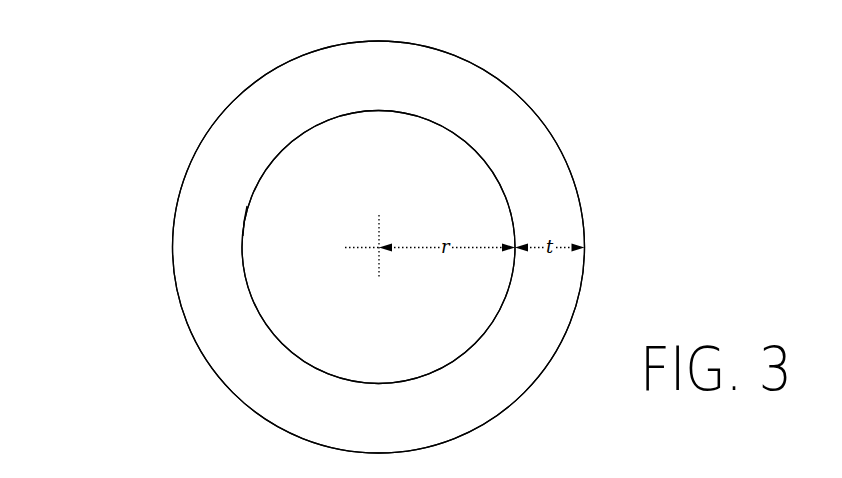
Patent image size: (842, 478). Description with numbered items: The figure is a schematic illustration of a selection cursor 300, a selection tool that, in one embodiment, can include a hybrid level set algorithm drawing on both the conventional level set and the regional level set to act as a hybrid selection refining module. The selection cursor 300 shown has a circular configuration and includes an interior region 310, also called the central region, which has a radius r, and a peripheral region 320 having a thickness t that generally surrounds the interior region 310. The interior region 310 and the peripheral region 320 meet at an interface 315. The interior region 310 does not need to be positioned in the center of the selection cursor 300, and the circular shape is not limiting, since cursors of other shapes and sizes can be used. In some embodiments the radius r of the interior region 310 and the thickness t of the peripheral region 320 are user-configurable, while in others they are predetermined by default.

The selection cursor 300 is at (95, 138).
The interior region 310 is at (400, 353).
The interface 315 is at (243, 236).
The peripheral region 320 is at (400, 430).